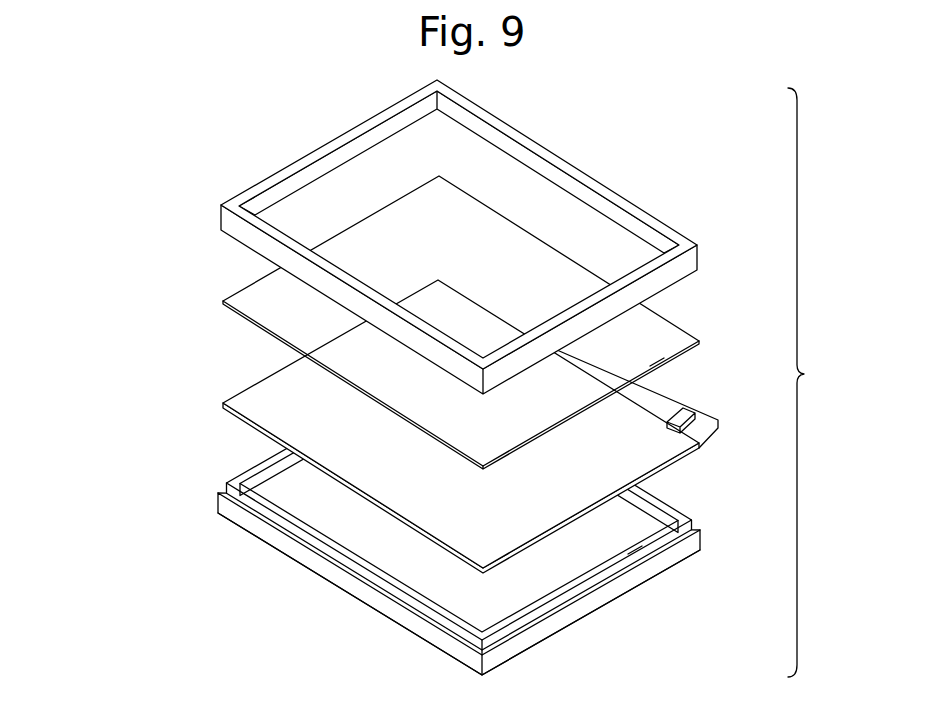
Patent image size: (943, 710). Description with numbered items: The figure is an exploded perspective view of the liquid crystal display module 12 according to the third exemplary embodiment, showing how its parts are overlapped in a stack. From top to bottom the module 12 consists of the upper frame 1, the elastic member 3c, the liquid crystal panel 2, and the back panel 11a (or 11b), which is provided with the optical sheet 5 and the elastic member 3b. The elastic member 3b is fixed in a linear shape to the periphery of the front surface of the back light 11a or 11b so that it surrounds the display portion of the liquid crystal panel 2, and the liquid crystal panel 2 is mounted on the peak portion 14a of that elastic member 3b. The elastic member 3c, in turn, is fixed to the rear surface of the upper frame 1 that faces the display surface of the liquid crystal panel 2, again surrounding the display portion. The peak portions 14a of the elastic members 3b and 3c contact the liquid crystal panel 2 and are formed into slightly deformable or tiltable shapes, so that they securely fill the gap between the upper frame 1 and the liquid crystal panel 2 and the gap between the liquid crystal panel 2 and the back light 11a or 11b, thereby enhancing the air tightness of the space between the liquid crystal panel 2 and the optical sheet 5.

The upper frame 1 is at (245, 193).
The liquid crystal panel 2 is at (223, 403).
The elastic member 3b is at (228, 485).
The elastic member 3c is at (223, 301).
The optical sheet 5 is at (347, 532).
The back panel 11a is at (220, 505).
The back panel 11b is at (459, 594).
The liquid crystal display module 12 is at (820, 382).
The peak portion 14a is at (657, 362).